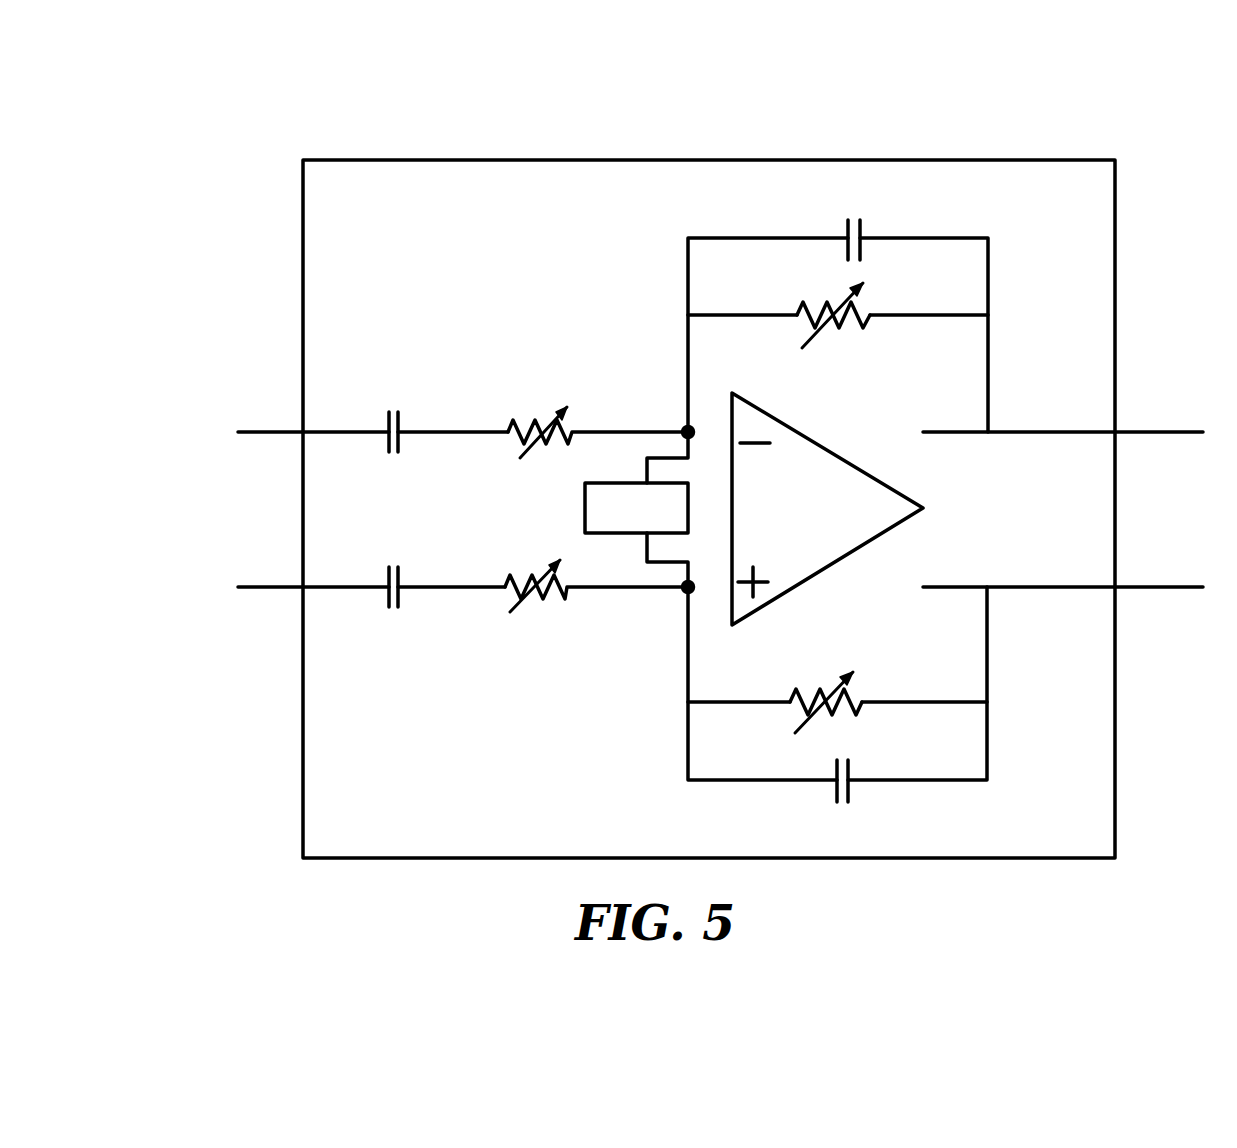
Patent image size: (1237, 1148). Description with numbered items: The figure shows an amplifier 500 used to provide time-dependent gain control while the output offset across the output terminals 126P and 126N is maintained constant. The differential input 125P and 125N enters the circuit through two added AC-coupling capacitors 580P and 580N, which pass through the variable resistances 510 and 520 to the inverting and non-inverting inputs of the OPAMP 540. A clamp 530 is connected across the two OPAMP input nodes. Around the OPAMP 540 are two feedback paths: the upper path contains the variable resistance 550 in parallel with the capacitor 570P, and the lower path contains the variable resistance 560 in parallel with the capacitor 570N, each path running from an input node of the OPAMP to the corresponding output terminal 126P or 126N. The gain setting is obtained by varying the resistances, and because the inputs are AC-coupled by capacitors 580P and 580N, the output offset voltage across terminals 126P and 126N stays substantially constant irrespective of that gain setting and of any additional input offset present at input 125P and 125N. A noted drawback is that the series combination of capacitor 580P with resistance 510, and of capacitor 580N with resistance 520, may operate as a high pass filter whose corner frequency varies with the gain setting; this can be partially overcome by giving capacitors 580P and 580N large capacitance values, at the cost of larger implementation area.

The amplifier 500 is at (640, 158).
The input 125P is at (266, 432).
The input 125N is at (270, 587).
The output terminal 126P is at (1196, 432).
The output terminal 126N is at (1200, 587).
The capacitor 580P is at (390, 458).
The capacitor 580N is at (390, 613).
The variable resistance 510 is at (533, 447).
The variable resistance 520 is at (548, 605).
The clamp 530 is at (585, 507).
The OPAMP 540 is at (827, 509).
The variable resistance 550 is at (862, 327).
The variable resistance 560 is at (834, 688).
The capacitor 570P is at (903, 198).
The capacitor 570N is at (843, 803).